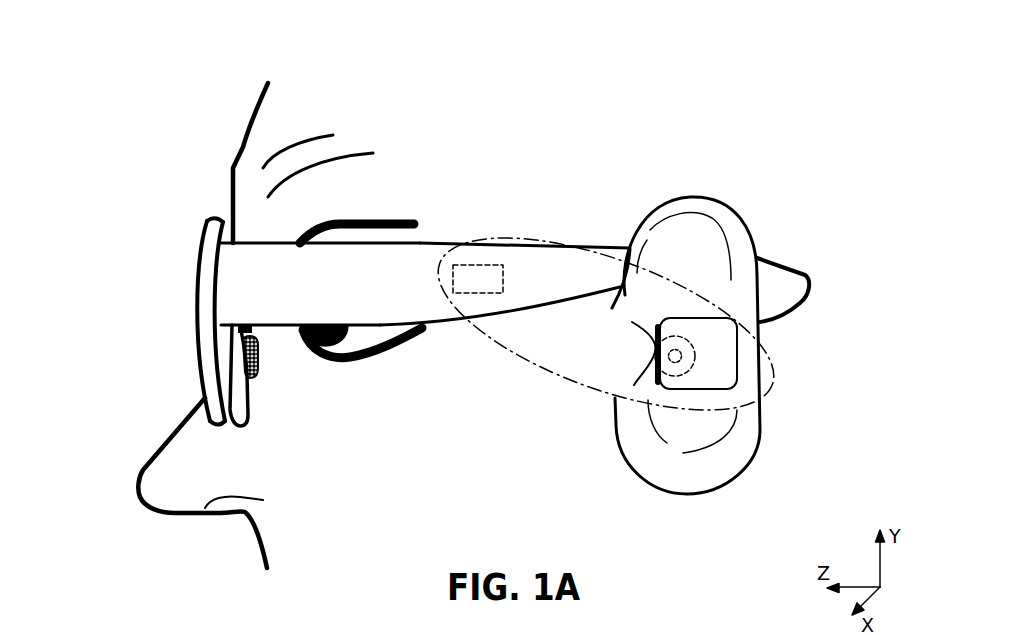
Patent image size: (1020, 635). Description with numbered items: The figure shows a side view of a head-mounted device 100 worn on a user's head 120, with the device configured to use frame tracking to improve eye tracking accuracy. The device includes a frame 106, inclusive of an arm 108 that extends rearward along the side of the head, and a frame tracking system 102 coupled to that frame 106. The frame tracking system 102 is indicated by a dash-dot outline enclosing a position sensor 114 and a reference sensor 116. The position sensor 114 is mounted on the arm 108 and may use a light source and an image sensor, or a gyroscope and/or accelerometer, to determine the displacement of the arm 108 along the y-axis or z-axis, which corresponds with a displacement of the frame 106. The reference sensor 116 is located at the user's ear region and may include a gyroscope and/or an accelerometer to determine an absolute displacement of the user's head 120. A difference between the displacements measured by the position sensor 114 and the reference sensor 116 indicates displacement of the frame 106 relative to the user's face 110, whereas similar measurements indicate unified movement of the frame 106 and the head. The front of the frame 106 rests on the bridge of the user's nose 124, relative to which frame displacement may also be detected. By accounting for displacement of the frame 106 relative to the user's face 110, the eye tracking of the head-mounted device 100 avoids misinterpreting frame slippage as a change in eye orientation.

The head-mounted device 100 is at (487, 36).
The frame tracking system 102 is at (763, 353).
The frame 106 is at (203, 307).
The arm 108 is at (530, 315).
The user's face 110 is at (194, 133).
The position sensor 114 is at (482, 276).
The reference sensor 116 is at (728, 363).
The user's head 120 is at (632, 88).
The bridge of the user's nose 124 is at (275, 348).